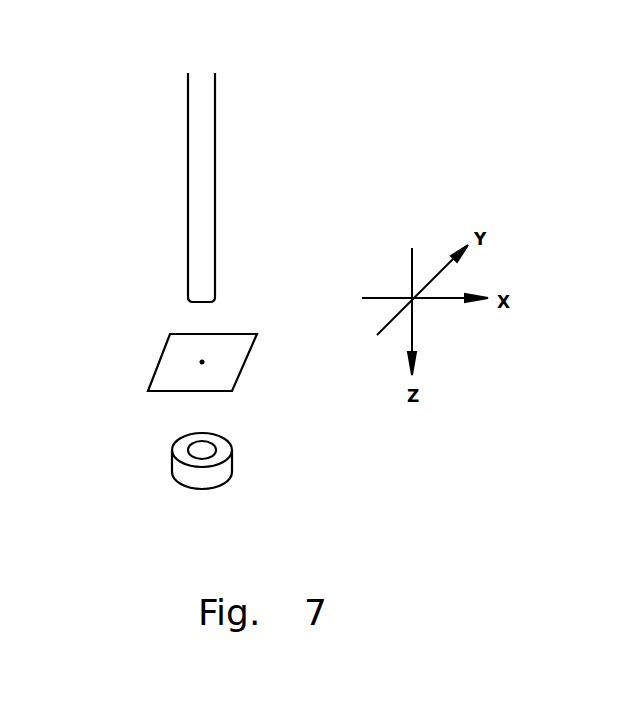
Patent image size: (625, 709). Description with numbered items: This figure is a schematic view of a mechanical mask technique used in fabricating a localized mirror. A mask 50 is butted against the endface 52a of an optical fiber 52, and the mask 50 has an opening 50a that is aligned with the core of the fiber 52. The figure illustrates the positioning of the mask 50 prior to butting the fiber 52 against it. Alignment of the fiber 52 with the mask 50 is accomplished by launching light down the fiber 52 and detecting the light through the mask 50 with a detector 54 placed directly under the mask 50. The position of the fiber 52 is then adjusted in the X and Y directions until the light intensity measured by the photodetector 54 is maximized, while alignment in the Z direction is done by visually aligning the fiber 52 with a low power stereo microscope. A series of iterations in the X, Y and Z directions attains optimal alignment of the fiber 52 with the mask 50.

The optical fiber 52 is at (203, 236).
The endface 52a is at (202, 312).
The mask 50 is at (220, 398).
The opening 50a is at (198, 367).
The detector 54 is at (217, 493).